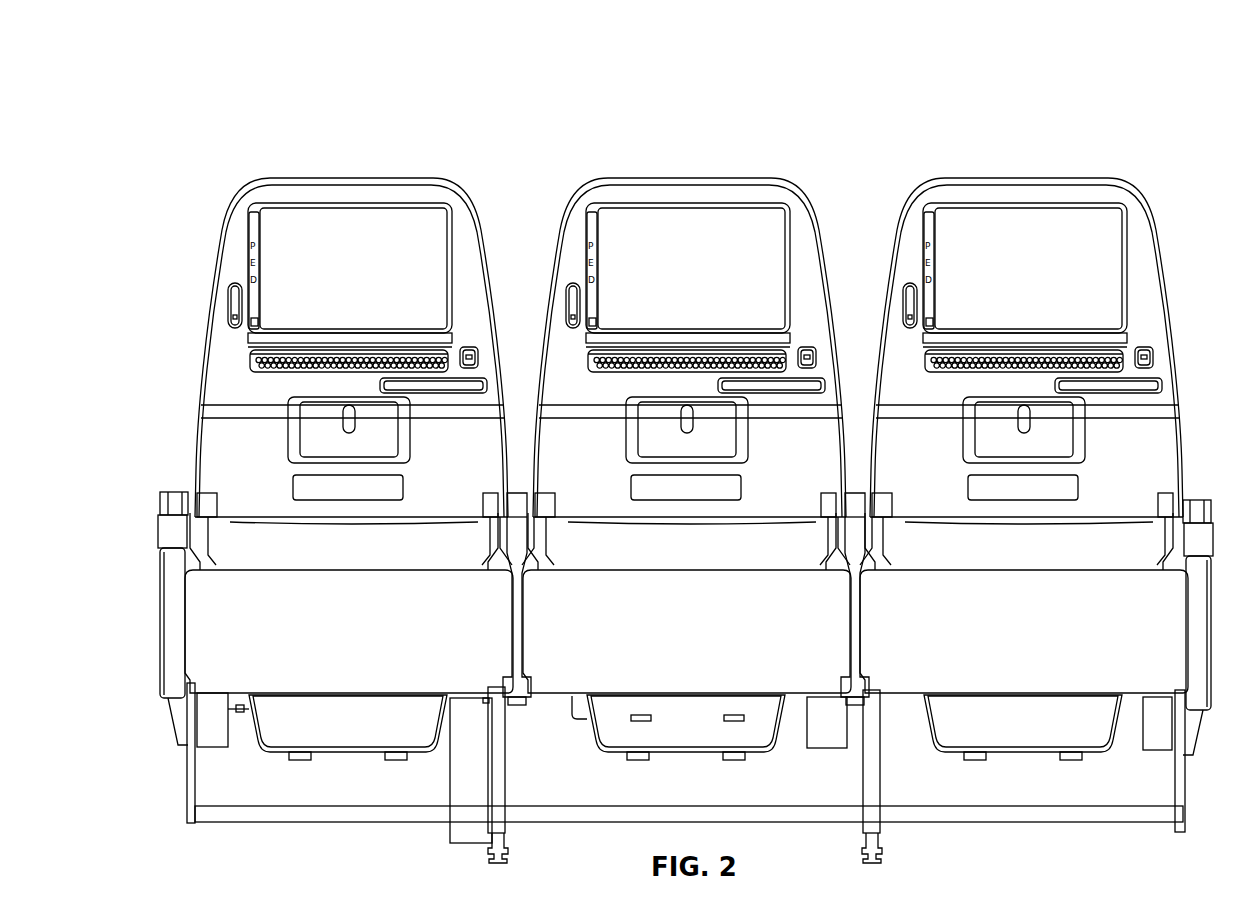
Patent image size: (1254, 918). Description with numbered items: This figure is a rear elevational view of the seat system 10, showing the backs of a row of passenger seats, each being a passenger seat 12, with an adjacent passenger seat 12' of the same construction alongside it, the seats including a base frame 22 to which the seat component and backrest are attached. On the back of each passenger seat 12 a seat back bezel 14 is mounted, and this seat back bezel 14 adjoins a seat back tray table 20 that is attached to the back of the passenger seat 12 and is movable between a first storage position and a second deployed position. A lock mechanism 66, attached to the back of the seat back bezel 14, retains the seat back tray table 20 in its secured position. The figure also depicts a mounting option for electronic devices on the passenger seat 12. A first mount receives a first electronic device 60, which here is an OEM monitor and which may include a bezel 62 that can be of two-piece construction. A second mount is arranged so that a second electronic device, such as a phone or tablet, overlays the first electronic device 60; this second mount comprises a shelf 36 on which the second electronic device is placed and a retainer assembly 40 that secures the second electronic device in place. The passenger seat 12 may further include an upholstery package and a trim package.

The seat system 10 is at (242, 110).
The passenger seat 12 is at (309, 444).
The second passenger seat 12' is at (687, 405).
The seat back bezel 14 is at (230, 357).
The seat back tray table 20 is at (232, 430).
The base frame 22 is at (247, 717).
The shelf 36 is at (250, 337).
The retainer assembly 40 is at (257, 232).
The first electronic device 60 is at (283, 212).
The bezel 62 is at (322, 203).
The lock mechanism 66 is at (197, 407).